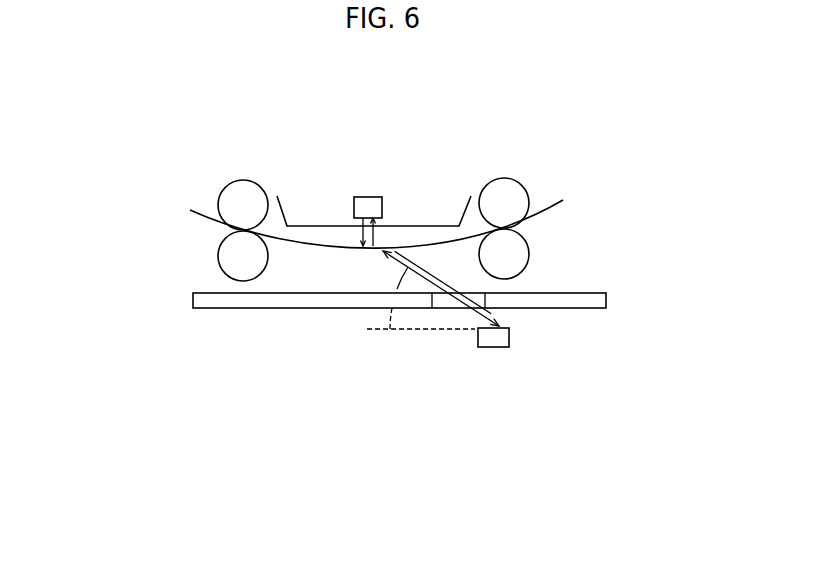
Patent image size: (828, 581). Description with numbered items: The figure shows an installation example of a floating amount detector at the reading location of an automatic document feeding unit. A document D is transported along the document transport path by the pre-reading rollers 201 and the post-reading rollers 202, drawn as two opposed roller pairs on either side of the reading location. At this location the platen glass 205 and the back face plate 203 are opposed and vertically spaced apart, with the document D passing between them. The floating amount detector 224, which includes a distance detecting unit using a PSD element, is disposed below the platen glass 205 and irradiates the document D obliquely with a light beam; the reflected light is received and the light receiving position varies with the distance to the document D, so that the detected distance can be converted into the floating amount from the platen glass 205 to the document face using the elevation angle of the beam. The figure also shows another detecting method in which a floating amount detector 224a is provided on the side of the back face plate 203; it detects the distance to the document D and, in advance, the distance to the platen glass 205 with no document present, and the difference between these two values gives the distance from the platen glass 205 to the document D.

The pre-reading rollers 201 is at (518, 189).
The post-reading rollers 202 is at (232, 192).
The back face plate 203 is at (288, 201).
The platen glass 205 is at (196, 302).
The floating amount detector 224 is at (493, 347).
The floating amount detector 224a is at (368, 198).
The document D is at (550, 214).